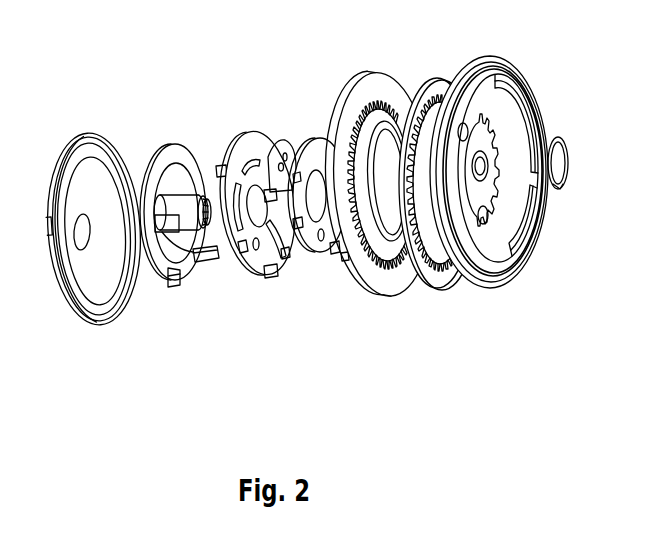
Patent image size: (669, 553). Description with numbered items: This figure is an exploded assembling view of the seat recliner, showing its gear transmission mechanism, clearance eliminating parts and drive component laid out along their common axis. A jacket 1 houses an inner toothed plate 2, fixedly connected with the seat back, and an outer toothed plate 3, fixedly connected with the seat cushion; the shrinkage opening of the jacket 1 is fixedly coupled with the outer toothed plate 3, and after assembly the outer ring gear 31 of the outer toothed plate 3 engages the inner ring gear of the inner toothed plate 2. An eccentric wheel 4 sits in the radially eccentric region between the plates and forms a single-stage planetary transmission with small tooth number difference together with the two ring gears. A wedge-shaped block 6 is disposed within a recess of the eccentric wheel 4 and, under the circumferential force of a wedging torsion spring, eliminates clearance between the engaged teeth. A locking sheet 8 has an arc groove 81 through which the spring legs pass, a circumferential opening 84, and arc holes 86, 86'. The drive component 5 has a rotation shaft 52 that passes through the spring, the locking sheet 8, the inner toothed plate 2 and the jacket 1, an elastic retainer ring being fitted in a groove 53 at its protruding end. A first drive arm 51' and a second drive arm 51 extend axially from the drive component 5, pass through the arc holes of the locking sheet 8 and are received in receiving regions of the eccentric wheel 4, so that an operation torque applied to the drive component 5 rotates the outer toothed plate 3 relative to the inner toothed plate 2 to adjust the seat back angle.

The jacket 1 is at (493, 72).
The inner toothed plate 2 is at (427, 84).
The outer toothed plate 3 is at (362, 93).
The outer ring gear 31 is at (377, 110).
The eccentric wheel 4 is at (314, 160).
The drive component 5 is at (151, 167).
The second drive arm 51 is at (187, 299).
The first drive arm 51' is at (138, 323).
The rotation shaft 52 is at (186, 197).
The groove 53 is at (207, 186).
The wedge-shaped block 6 is at (287, 140).
The locking sheet 8 is at (264, 145).
The arc groove 81 is at (250, 158).
The circumferential opening 84 is at (260, 266).
The arc hole 86 is at (226, 312).
The arc hole 86' is at (270, 315).